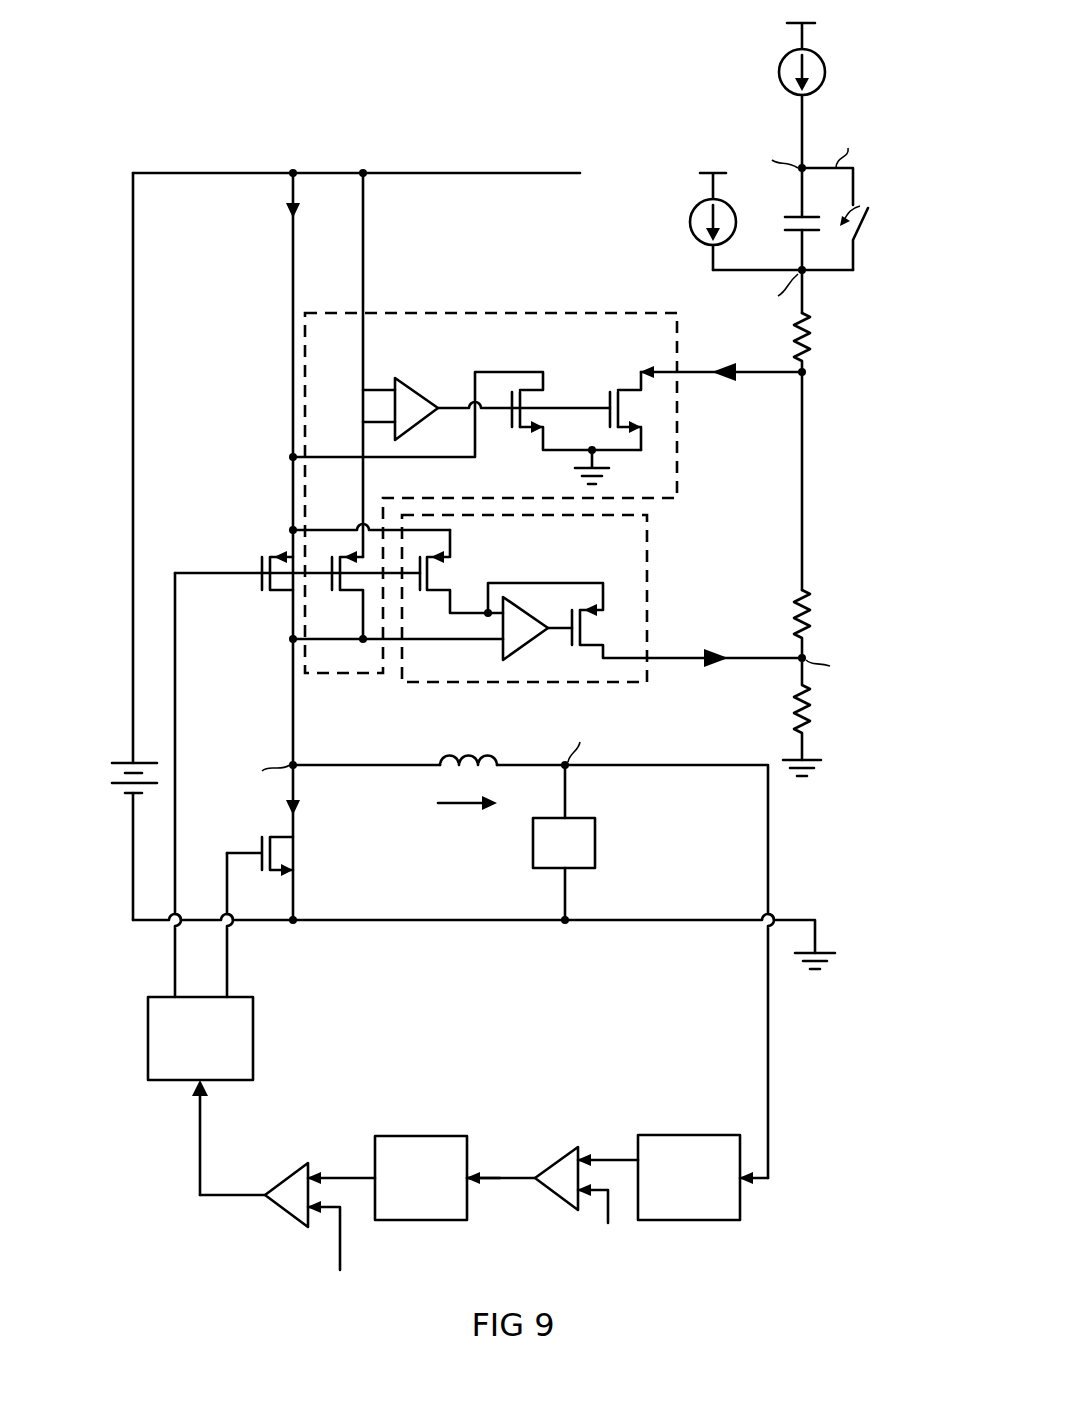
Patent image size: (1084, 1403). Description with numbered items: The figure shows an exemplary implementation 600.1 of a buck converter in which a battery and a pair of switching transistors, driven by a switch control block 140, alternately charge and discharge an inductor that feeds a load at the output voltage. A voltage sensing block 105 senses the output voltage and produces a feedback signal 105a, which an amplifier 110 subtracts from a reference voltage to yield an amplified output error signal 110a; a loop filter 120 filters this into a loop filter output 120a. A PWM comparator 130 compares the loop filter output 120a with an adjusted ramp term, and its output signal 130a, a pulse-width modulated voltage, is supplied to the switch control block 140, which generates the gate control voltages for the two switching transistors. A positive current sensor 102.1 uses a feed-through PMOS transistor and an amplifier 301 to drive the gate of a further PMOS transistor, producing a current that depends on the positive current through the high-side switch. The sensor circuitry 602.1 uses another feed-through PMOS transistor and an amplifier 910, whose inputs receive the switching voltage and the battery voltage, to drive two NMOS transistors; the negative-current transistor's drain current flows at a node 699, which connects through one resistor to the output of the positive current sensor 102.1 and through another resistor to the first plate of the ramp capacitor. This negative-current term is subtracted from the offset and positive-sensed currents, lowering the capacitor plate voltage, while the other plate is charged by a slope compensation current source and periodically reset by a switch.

The implementation of buck converter 600.1 is at (190, 102).
The circuitry 602.1 is at (535, 313).
The amplifier 910 is at (405, 390).
The node 699 is at (806, 375).
The positive current sensor 102.1 is at (456, 683).
The amplifier 301 is at (522, 646).
The switch control block 140 is at (228, 1082).
The PWM comparator 130 is at (292, 1176).
The output signal 130a is at (200, 1168).
The loop filter 120 is at (430, 1222).
The loop filter output 120a is at (357, 1178).
The amplifier 110 is at (562, 1160).
The amplified output error signal 110a is at (508, 1182).
The voltage sensing block 105 is at (685, 1135).
The signal 105a is at (616, 1160).